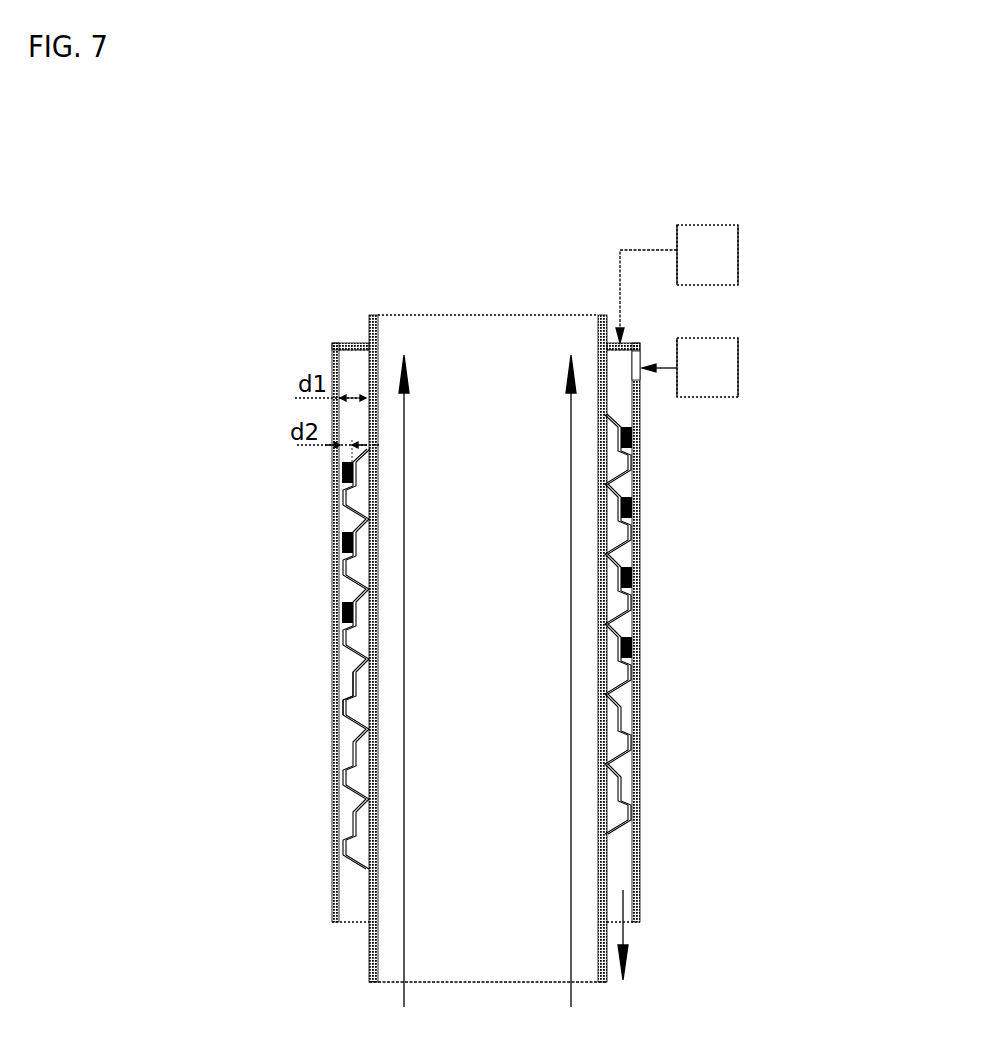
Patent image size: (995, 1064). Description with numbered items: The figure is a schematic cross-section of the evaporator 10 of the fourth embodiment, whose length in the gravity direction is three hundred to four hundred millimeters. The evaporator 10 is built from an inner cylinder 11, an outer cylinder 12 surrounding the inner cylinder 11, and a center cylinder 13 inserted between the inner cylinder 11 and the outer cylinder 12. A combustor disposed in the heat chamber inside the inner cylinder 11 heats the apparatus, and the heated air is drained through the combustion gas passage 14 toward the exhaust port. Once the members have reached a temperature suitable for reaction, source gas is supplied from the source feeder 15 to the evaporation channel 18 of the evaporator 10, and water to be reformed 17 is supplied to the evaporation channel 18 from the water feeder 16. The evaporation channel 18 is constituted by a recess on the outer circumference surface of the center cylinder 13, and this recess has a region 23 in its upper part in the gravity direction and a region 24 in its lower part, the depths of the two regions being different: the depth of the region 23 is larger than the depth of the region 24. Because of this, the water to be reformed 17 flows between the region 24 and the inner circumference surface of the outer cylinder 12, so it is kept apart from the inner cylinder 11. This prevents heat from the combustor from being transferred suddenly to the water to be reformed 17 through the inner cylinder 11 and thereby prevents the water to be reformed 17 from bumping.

The evaporator 10 is at (143, 213).
The inner cylinder 11 is at (368, 320).
The outer cylinder 12 is at (332, 366).
The center cylinder 13 is at (347, 577).
The combustion gas passage 14 is at (400, 814).
The source feeder 15 is at (738, 250).
The water feeder 16 is at (738, 365).
The water to be reformed 17 is at (342, 480).
The evaporation channel 18 is at (355, 665).
The region 23 is at (622, 557).
The region 24 is at (625, 585).